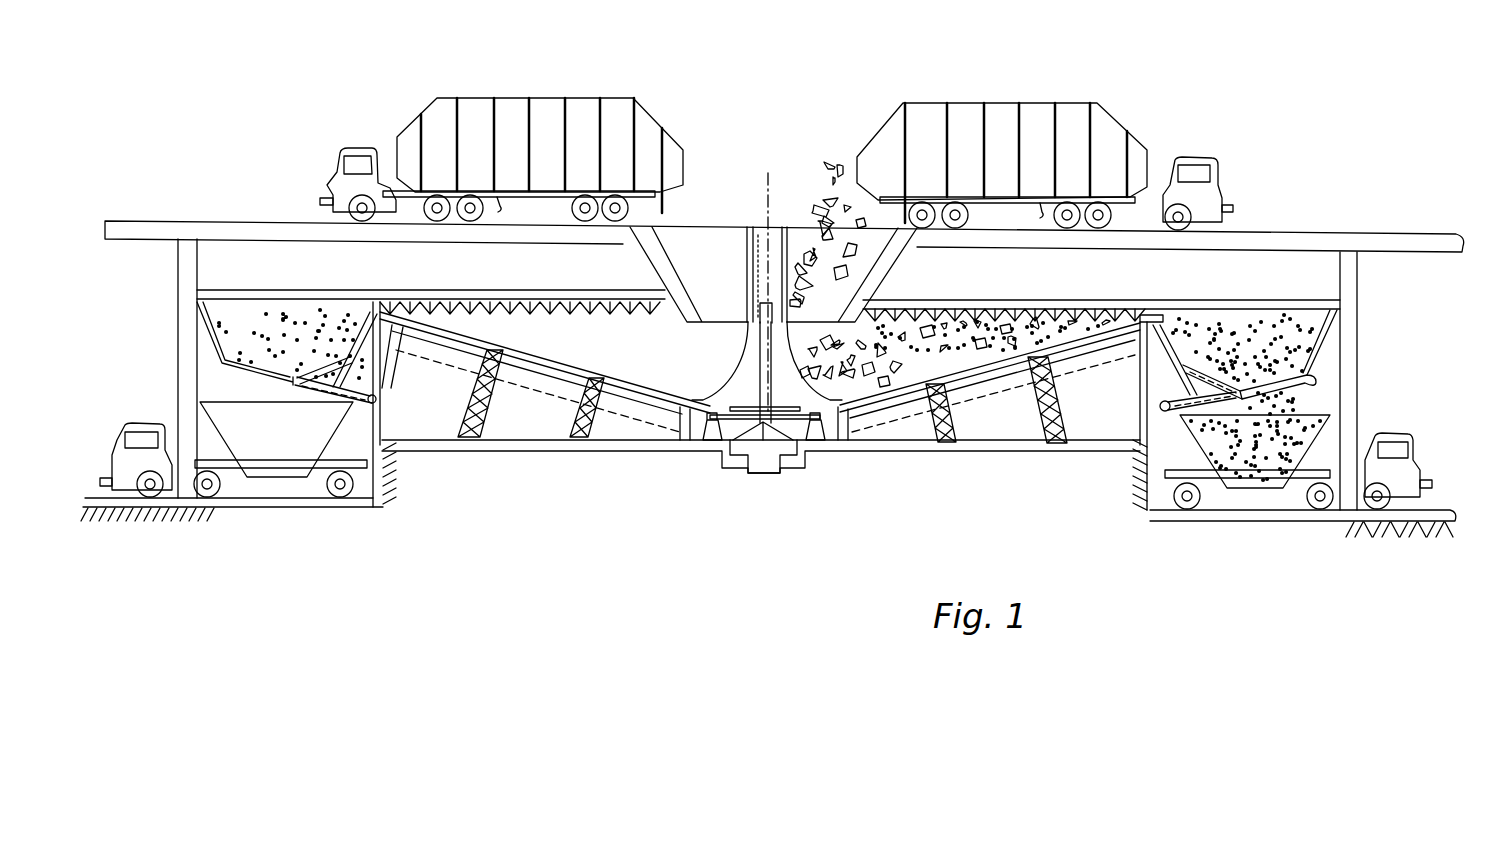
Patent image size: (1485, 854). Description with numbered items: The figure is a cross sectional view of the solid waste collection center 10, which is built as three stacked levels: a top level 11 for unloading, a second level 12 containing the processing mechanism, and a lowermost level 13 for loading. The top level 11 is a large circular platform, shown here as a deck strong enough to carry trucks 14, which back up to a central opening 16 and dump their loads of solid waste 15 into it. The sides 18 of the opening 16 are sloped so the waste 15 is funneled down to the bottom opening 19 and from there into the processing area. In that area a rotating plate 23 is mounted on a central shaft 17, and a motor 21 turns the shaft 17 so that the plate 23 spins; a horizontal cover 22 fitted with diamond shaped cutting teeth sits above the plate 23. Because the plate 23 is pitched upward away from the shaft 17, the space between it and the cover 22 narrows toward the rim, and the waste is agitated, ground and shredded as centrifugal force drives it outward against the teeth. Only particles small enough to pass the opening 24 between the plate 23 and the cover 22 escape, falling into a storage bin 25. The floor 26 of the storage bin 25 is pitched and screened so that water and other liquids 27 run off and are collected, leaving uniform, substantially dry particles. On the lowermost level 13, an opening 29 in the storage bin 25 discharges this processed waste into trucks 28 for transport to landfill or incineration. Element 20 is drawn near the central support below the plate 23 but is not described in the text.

The collection center 10 is at (1243, 226).
The top level 11 is at (1290, 233).
The second level 12 is at (1437, 255).
The lowermost level 13 is at (1437, 495).
The trucks 14 is at (1102, 112).
The solid waste 15 is at (822, 190).
The opening 16 is at (707, 248).
The shaft 17 is at (770, 200).
The sides of the opening 18 is at (883, 250).
The bottom opening 19 is at (743, 328).
The central support footing 20 is at (784, 428).
The motor 21 is at (585, 383).
The cover 22 is at (1057, 297).
The rotating plate 23 is at (890, 377).
The opening 24 is at (381, 303).
The storage bin 25 is at (1327, 338).
The floor 26 is at (1192, 377).
The liquids 27 is at (1222, 397).
The trucks 28 is at (132, 428).
The opening 29 is at (1312, 390).